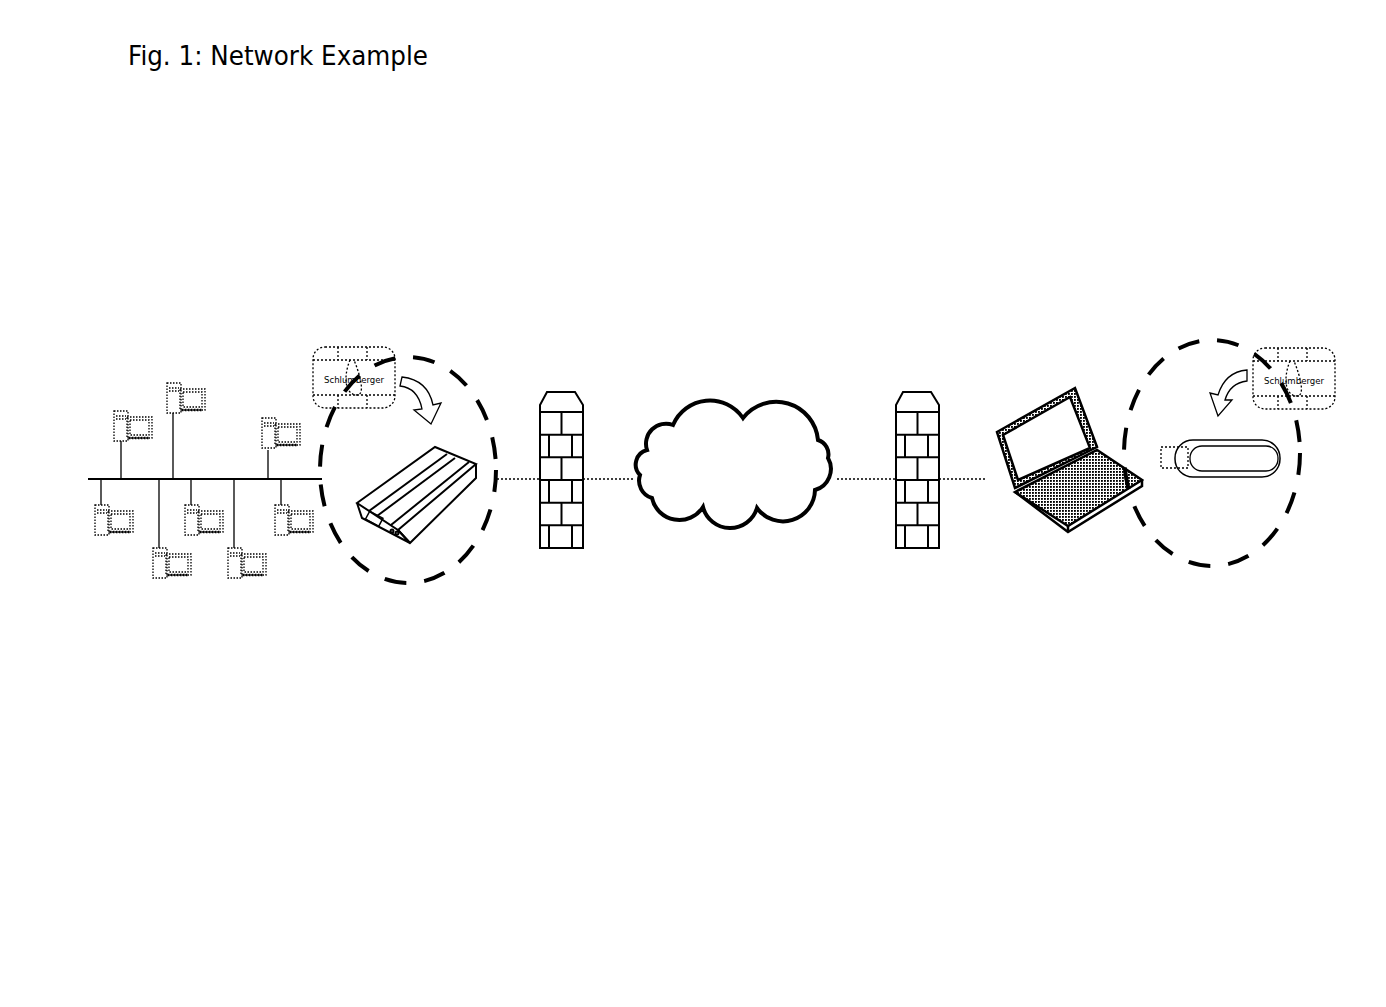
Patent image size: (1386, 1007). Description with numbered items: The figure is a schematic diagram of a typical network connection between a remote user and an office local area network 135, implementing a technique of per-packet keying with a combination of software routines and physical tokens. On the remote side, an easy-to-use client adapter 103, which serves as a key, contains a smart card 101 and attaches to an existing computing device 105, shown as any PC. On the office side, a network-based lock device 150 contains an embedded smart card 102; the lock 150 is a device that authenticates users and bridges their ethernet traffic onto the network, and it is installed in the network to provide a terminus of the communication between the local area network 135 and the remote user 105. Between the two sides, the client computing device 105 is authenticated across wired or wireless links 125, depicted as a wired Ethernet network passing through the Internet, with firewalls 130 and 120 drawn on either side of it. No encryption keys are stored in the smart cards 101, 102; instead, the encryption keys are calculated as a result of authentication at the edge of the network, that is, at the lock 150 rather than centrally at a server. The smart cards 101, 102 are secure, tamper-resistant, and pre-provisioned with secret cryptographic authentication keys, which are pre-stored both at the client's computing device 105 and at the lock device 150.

The smart card 101 is at (1297, 336).
The embedded smart card 102 is at (353, 336).
The client adapter 103 is at (1245, 484).
The computing device 105 is at (1090, 535).
The firewall 120 is at (918, 554).
The wired or wireless links 125 is at (747, 405).
The firewall 130 is at (553, 552).
The local area network 135 is at (218, 476).
The lock device 150 is at (420, 585).